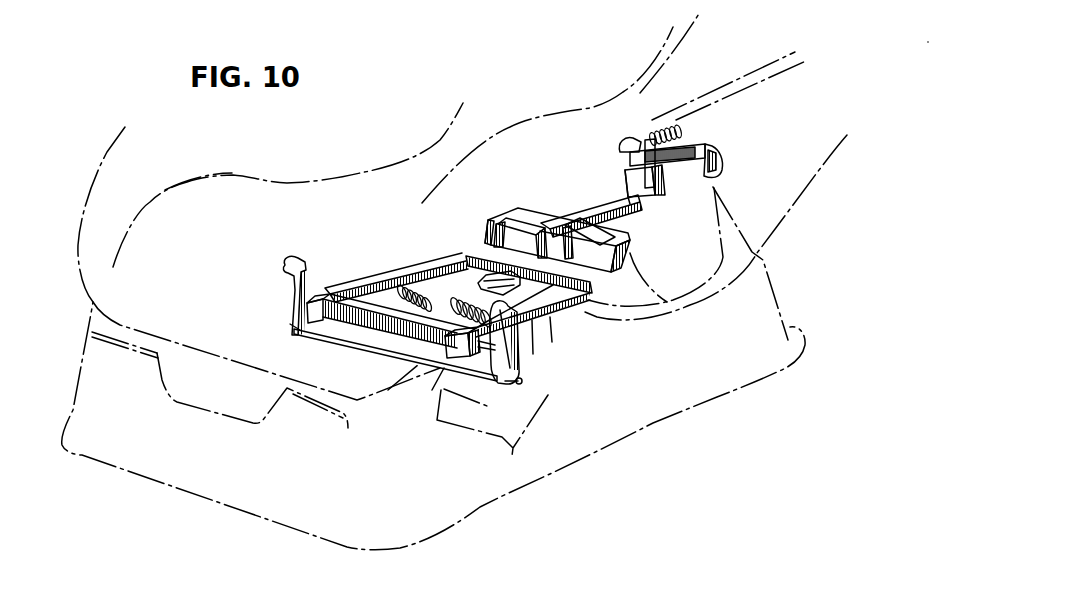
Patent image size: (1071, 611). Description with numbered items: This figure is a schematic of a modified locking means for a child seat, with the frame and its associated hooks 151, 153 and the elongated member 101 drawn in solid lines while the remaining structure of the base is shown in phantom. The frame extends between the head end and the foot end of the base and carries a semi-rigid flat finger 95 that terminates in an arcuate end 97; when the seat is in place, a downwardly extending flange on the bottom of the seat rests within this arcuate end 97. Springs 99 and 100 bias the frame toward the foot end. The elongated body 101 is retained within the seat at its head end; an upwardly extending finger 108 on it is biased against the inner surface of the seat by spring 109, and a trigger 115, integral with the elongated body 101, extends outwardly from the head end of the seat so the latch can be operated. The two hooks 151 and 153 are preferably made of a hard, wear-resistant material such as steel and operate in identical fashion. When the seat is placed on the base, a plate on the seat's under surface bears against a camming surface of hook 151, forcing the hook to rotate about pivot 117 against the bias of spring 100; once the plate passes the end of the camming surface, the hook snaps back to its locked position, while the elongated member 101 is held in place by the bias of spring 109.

The semi-rigid flat finger 95 is at (550, 254).
The arcuate end 97 is at (480, 284).
The spring 99 is at (408, 290).
The spring 100 is at (473, 308).
The elongated body 101 is at (583, 213).
The upwardly extending finger 108 is at (623, 157).
The spring 109 is at (681, 137).
The trigger 115 is at (720, 166).
The pivot 117 is at (363, 346).
The hook 151 is at (298, 275).
The hook 153 is at (516, 361).